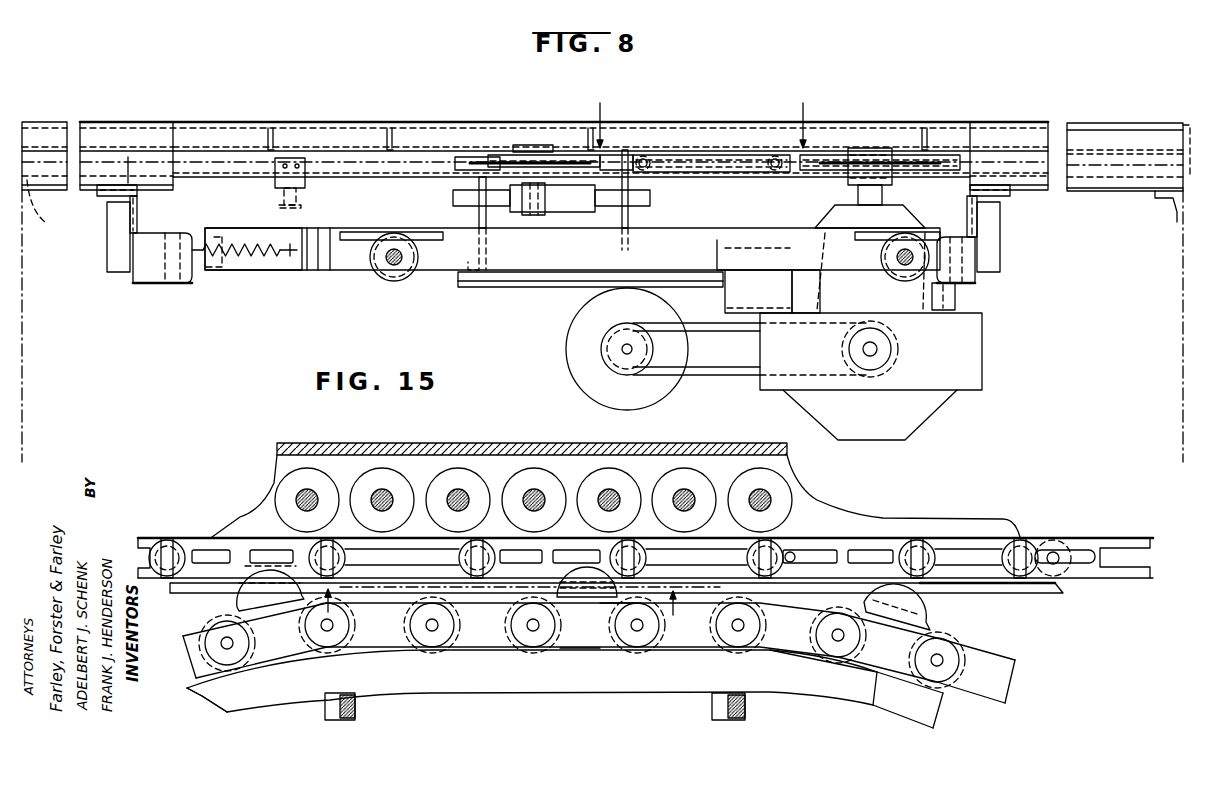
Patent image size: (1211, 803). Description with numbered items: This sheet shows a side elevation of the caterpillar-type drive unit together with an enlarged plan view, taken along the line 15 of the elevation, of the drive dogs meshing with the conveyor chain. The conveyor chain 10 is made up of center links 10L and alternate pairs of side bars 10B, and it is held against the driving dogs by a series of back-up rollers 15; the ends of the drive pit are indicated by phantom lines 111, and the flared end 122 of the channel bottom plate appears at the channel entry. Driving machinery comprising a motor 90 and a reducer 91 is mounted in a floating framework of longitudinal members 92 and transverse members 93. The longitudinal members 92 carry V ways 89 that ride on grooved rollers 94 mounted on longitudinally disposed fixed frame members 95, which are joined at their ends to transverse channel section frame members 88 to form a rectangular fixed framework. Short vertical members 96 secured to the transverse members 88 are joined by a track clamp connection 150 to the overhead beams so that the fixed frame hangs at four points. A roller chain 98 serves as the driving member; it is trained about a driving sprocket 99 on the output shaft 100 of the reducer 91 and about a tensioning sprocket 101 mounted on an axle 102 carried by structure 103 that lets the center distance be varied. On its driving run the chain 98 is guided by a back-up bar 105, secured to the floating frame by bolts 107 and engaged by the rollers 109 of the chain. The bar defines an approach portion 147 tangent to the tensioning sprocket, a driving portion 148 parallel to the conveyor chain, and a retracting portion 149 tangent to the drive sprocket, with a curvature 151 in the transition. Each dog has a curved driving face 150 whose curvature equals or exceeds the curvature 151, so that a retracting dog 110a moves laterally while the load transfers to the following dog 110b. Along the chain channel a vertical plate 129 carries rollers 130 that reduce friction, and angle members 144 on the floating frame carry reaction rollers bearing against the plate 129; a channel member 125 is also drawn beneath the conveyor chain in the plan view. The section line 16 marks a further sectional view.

In FIG. 8, the conveyor chain 10 is at (225, 165).
In FIG. 15, the side bars 10B is at (253, 548).
In FIG. 15, the center links 10L is at (410, 548).
In FIG. 8, the back-up rollers 15 is at (701, 122).
In FIG. 15, the section line for FIG. 16 is at (512, 601).
In FIG. 8, the transverse channel section frame members 88 is at (130, 276).
In FIG. 8, the V ways 89 is at (357, 232).
In FIG. 8, the motor 90 is at (578, 346).
In FIG. 8, the reducer 91 is at (965, 383).
In FIG. 8, the longitudinal members 92 is at (676, 240).
In FIG. 8, the transverse members 93 is at (240, 228).
In FIG. 8, the grooved rollers 94 is at (404, 276).
In FIG. 8, the longitudinal fixed frame members 95 is at (165, 233).
In FIG. 8, the short vertical members 96 is at (112, 243).
In FIG. 15, the roller chain 98 is at (603, 641).
In FIG. 8, the driving sprocket 99 is at (846, 179).
In FIG. 8, the output shaft 100 is at (880, 198).
In FIG. 8, the tensioning sprocket 101 is at (498, 163).
In FIG. 8, the axle 102 is at (455, 197).
In FIG. 8, the structure 103 is at (560, 204).
In FIG. 15, the back-up bar 105 is at (540, 693).
In FIG. 15, the bolts 107 is at (356, 708).
In FIG. 15, the rollers 109 is at (210, 631).
In FIG. 15, the retracting dog 110a is at (915, 631).
In FIG. 15, the following dog 110b is at (587, 597).
In FIG. 8, the phantom lines 111 is at (23, 400).
In FIG. 8, the flared end 122 is at (46, 206).
In FIG. 15, the rail bar 125 is at (1010, 593).
In FIG. 15, the vertical plate 129 is at (665, 446).
In FIG. 15, the rollers 130 is at (440, 487).
In FIG. 15, the angle members 144 is at (240, 603).
In FIG. 15, the approach portion 147 is at (218, 703).
In FIG. 15, the driving portion 148 is at (580, 655).
In FIG. 15, the retracting portion 149 is at (876, 708).
In FIG. 8, the driving face 150 is at (100, 194).
In FIG. 15, the driving face 150 is at (930, 622).
In FIG. 15, the curvature 151 is at (778, 657).